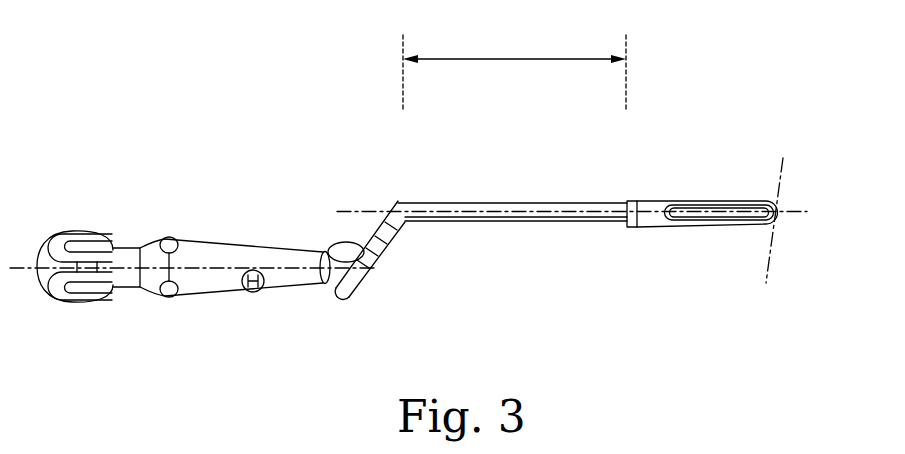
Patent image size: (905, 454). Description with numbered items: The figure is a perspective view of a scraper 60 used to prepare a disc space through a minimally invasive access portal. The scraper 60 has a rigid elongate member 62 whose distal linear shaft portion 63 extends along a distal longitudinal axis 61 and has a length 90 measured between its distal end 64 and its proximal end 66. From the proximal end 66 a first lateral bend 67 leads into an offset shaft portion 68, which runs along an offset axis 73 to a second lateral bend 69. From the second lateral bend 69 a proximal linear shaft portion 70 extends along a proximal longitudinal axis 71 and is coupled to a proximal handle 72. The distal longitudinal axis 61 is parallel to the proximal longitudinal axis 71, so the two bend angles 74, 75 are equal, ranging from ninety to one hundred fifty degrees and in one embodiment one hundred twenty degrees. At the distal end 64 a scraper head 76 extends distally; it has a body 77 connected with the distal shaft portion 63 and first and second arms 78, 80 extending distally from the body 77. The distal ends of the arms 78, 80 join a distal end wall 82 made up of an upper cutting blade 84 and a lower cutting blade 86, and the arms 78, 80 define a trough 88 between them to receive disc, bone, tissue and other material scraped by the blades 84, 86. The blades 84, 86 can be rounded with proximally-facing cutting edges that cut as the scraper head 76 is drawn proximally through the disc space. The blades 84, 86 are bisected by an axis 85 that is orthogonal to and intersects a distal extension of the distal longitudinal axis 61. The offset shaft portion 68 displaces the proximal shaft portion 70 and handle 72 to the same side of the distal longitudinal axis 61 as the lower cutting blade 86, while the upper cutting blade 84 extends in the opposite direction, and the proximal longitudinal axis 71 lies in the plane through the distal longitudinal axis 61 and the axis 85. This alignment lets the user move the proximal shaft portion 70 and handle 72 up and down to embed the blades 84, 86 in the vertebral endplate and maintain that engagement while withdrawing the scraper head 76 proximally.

The scraper 60 is at (313, 138).
The distal longitudinal axis 61 is at (537, 202).
The elongate member 62 is at (477, 232).
The distal linear shaft portion 63 is at (481, 203).
The distal end 64 is at (630, 202).
The proximal end 66 is at (400, 192).
The first lateral bend 67 is at (372, 212).
The offset shaft portion 68 is at (345, 245).
The second lateral bend 69 is at (333, 286).
The proximal linear shaft portion 70 is at (227, 294).
The proximal longitudinal axis 71 is at (197, 270).
The proximal handle 72 is at (86, 302).
The offset axis 73 is at (355, 226).
The angle 74 is at (392, 240).
The angle 75 is at (335, 243).
The scraper head 76 is at (677, 240).
The body 77 is at (656, 200).
The first arm 78 is at (703, 202).
The second arm 80 is at (704, 225).
The distal end wall 82 is at (780, 210).
The upper cutting blade 84 is at (787, 166).
The axis 85 is at (770, 276).
The lower cutting blade 86 is at (780, 223).
The trough 88 is at (757, 202).
The length 90 is at (514, 66).